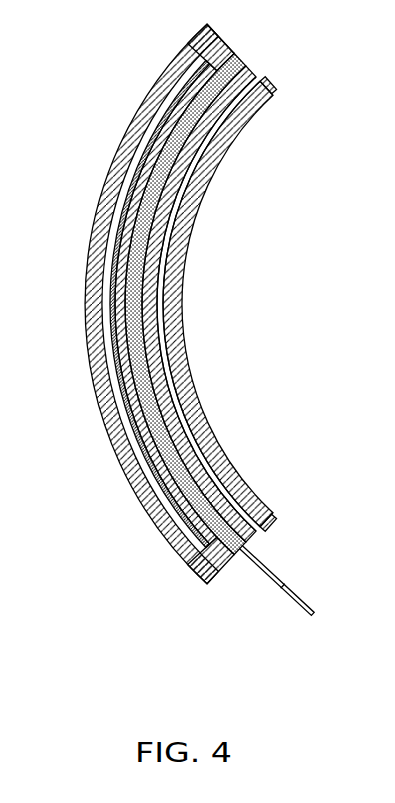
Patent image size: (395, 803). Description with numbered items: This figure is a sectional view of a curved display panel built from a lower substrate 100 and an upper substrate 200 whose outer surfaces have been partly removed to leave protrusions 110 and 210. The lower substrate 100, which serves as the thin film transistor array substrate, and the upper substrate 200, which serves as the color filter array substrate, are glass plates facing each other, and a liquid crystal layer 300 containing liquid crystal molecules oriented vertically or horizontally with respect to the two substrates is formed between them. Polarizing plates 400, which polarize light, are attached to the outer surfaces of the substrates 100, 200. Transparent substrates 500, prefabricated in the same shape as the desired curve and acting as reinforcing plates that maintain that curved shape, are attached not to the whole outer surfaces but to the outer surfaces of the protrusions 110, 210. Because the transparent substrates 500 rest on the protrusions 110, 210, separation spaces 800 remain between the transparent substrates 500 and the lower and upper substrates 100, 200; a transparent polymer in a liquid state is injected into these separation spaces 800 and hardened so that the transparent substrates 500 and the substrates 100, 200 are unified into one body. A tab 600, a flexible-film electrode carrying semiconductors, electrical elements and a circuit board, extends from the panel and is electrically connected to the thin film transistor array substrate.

The lower substrate 100 is at (140, 111).
The protrusion 110 is at (188, 45).
The upper substrate 200 is at (232, 122).
The protrusion 210 is at (263, 94).
The liquid crystal layer 300 is at (235, 49).
The polarizing plate 400 is at (184, 386).
The transparent substrate 500 is at (96, 326).
The tab 600 is at (307, 607).
The separation space 800 is at (163, 251).